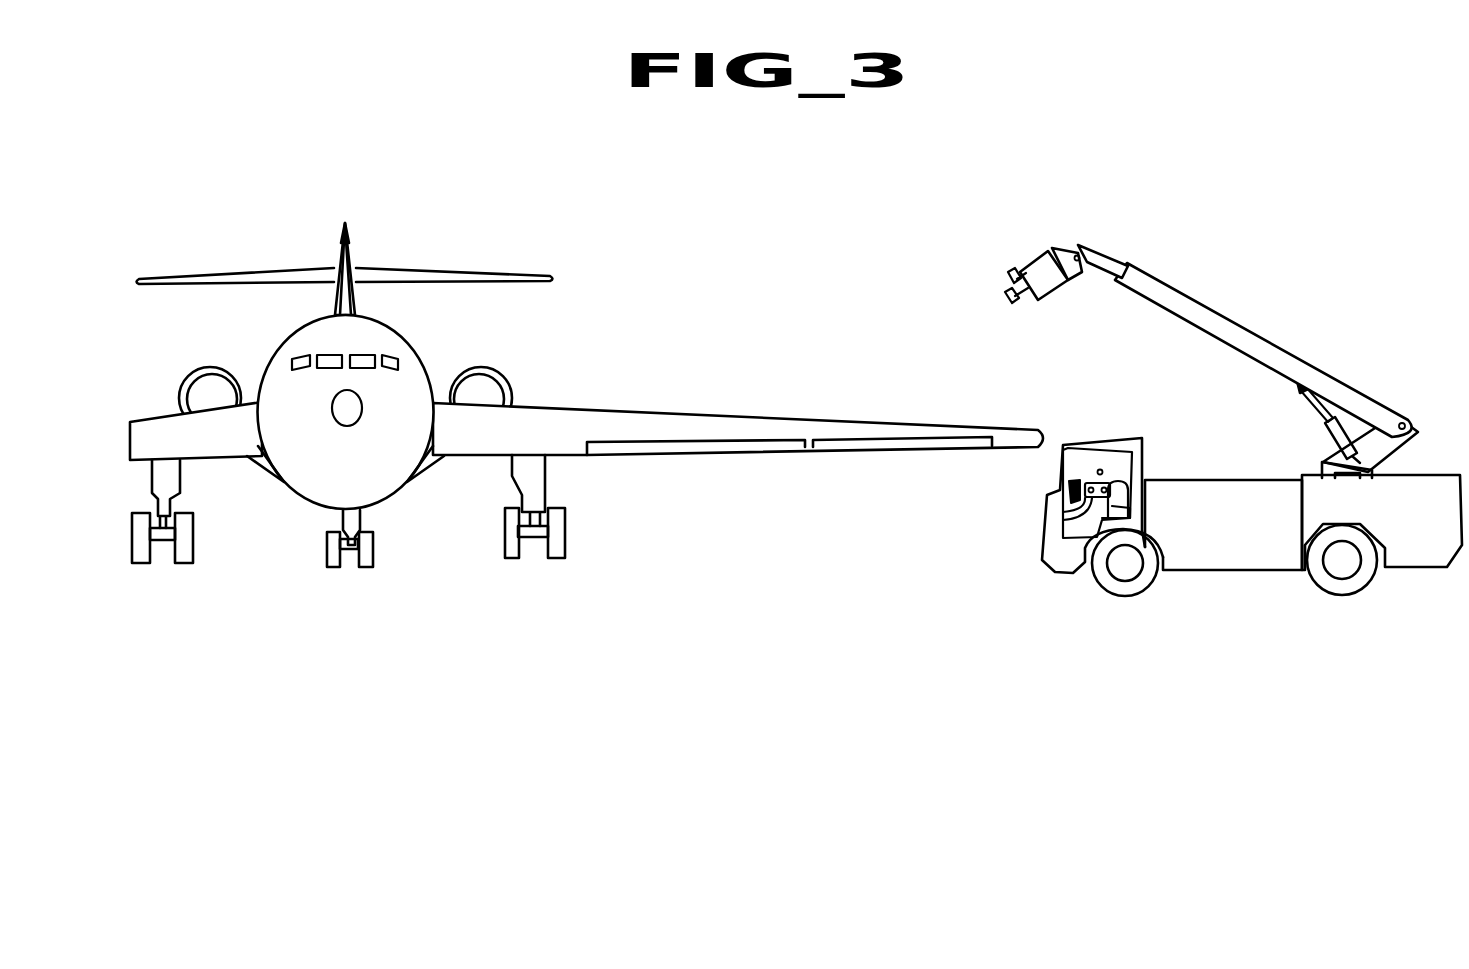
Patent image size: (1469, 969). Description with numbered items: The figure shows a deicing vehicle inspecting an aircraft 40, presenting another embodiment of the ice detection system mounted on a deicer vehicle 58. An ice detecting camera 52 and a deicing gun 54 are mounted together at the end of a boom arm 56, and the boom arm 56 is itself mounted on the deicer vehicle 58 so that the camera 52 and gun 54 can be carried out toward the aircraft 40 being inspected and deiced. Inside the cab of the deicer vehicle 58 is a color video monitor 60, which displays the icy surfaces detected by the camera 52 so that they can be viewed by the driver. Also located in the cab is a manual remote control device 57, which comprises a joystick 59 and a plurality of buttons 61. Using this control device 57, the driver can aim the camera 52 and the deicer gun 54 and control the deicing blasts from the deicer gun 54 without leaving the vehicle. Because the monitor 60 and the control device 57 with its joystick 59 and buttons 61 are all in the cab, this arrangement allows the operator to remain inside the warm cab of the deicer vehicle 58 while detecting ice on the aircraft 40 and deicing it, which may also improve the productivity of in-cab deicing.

The aircraft 40 is at (648, 418).
The ice detecting camera 52 is at (1046, 252).
The deicing gun 54 is at (1063, 290).
The boom arm 56 is at (1226, 316).
The manual remote control device 57 is at (1113, 485).
The deicer vehicle 58 is at (1223, 478).
The joystick 59 is at (1102, 468).
The color video monitor 60 is at (1078, 478).
The buttons 61 is at (1062, 527).